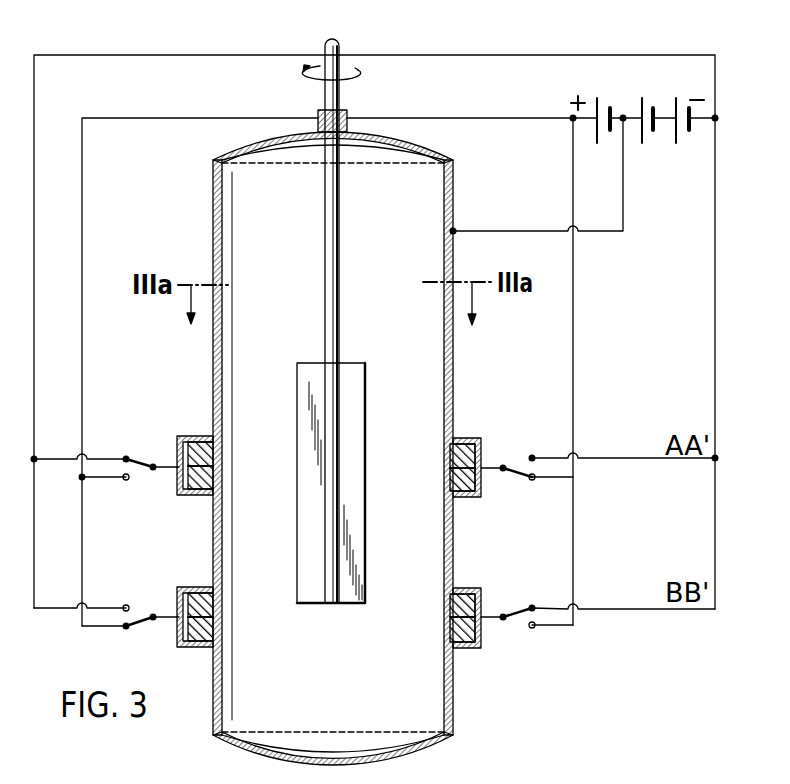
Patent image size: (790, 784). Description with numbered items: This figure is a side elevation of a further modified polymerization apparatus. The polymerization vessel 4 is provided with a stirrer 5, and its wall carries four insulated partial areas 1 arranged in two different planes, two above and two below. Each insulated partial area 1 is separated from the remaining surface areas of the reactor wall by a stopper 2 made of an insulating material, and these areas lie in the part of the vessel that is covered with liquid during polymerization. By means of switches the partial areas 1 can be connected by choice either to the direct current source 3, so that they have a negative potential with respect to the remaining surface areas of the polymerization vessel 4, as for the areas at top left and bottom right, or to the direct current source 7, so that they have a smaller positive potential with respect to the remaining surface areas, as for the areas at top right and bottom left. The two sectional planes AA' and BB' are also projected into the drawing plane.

The insulated partial area 1 is at (449, 470).
The stopper 2 is at (462, 438).
The direct-current source 3 is at (643, 127).
The polymerization vessel 4 is at (213, 213).
The stirrer 5 is at (326, 97).
The direct current source 7 is at (603, 101).